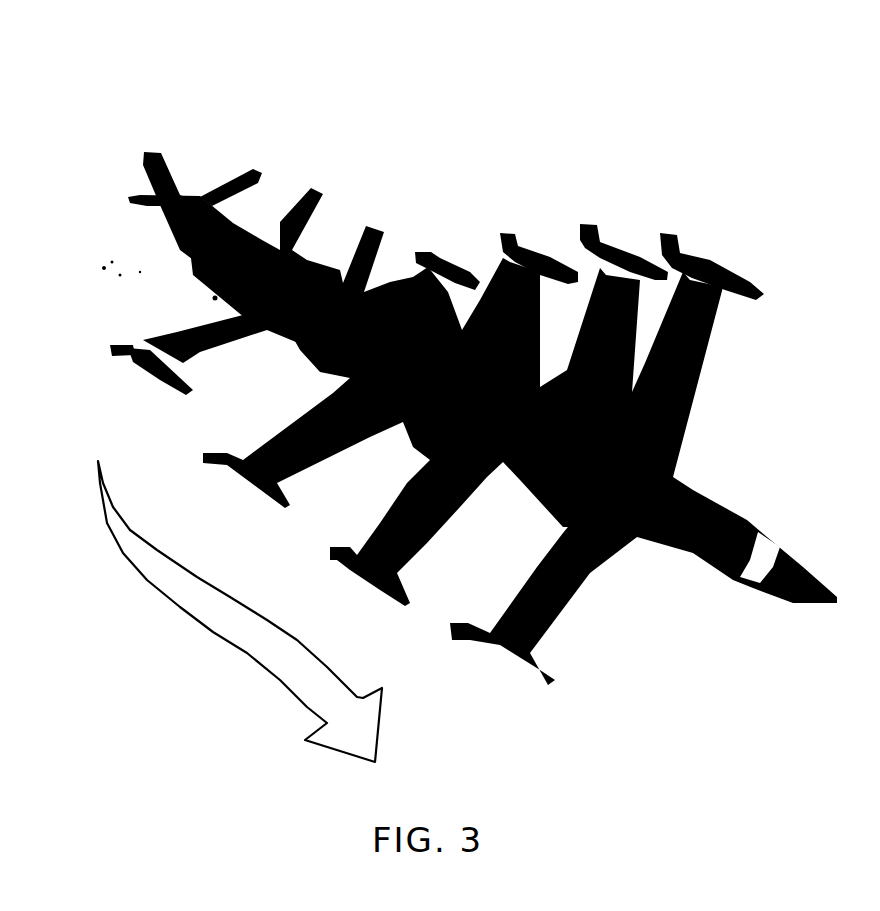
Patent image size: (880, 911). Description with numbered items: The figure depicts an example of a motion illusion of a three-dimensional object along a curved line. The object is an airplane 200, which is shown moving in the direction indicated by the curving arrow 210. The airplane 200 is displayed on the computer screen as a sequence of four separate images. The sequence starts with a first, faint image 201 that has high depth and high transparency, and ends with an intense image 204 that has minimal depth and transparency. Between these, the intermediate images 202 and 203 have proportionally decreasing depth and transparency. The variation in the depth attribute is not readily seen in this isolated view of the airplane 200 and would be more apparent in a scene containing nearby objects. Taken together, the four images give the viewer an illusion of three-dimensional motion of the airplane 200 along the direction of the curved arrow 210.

The airplane 200 is at (672, 82).
The first faint image 201 is at (448, 263).
The intermediate image 202 is at (532, 248).
The intermediate image 203 is at (618, 245).
The intense image 204 is at (713, 258).
The curving arrow 210 is at (228, 622).